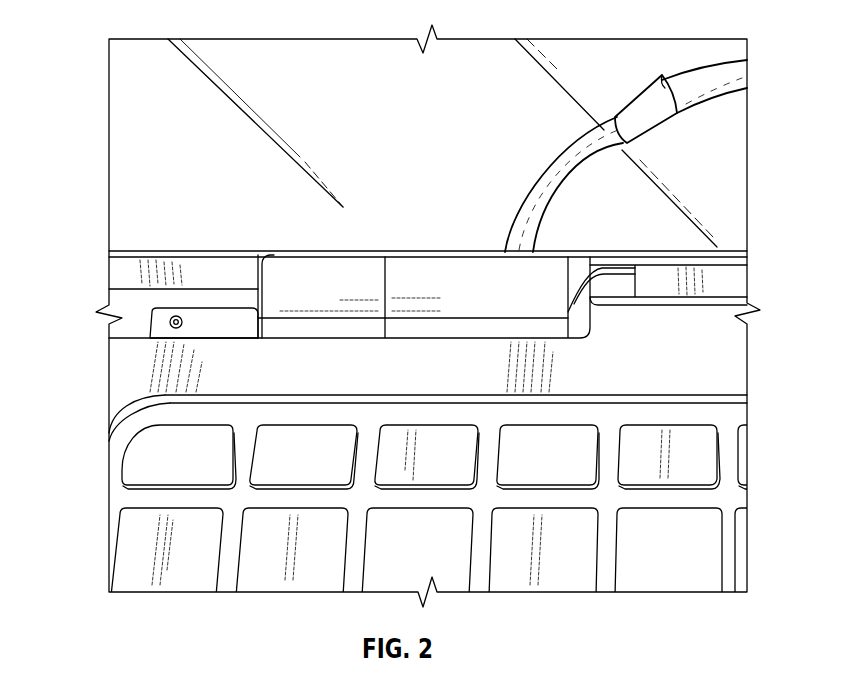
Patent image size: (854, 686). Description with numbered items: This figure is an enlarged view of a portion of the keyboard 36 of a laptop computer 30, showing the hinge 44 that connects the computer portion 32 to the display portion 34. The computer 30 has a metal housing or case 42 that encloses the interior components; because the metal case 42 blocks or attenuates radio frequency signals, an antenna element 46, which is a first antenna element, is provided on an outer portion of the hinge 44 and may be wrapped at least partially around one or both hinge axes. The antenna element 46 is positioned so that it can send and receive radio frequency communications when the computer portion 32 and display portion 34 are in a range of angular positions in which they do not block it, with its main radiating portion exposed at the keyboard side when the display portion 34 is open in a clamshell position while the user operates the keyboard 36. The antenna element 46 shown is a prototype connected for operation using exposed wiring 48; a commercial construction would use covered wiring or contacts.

The laptop computer 30 is at (793, 54).
The computer portion 32 is at (135, 500).
The display portion 34 is at (123, 120).
The keyboard 36 is at (155, 424).
The housing or case 42 is at (128, 367).
The hinge 44 is at (280, 300).
The antenna element 46 is at (515, 323).
The exposed wiring 48 is at (733, 73).